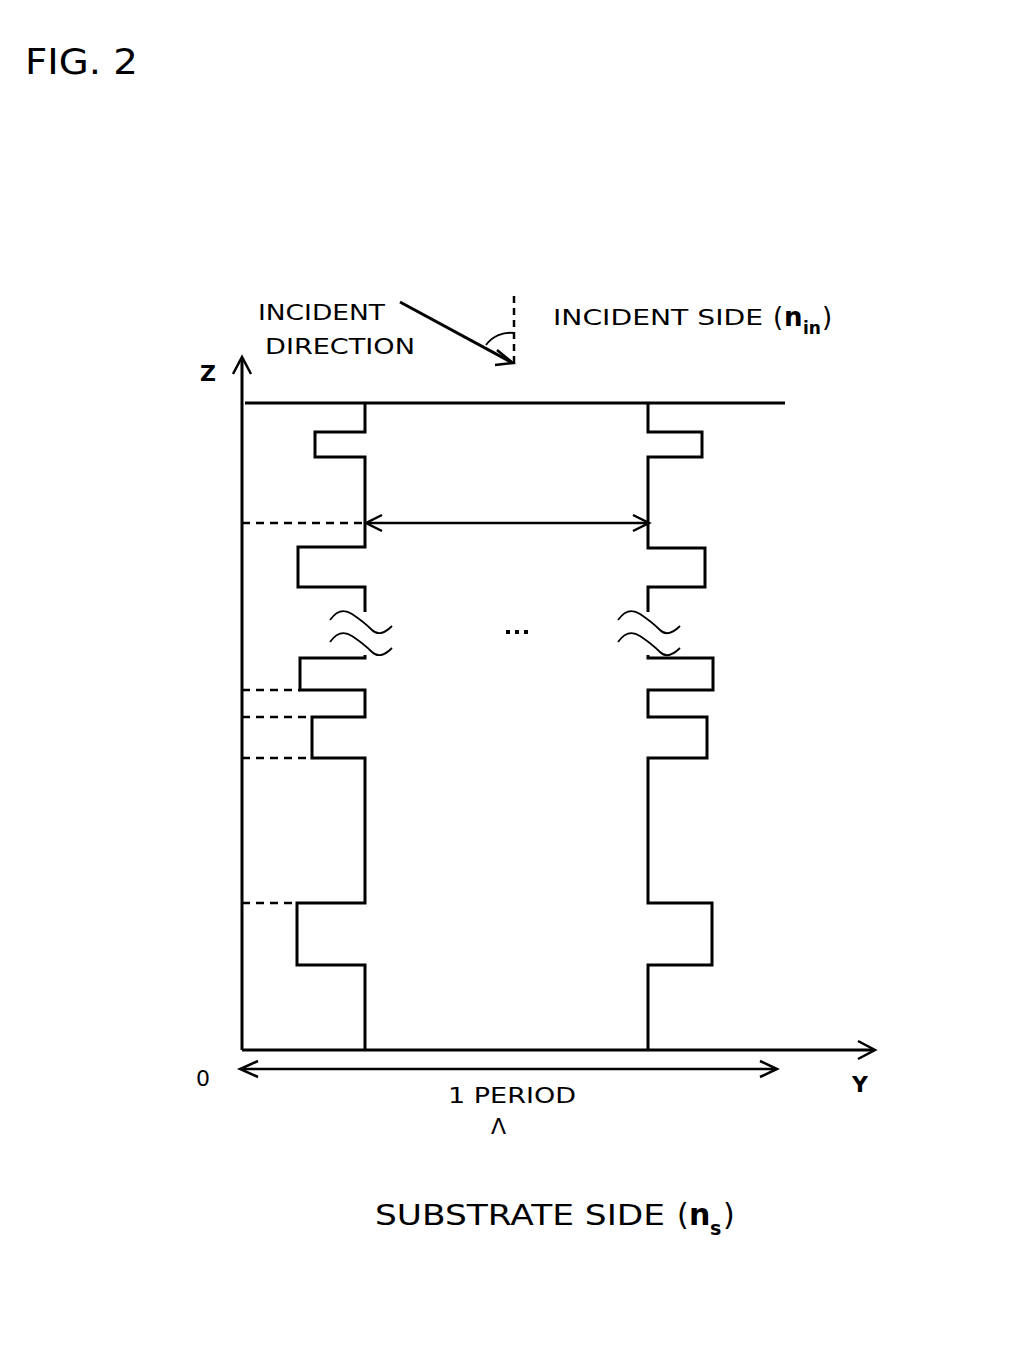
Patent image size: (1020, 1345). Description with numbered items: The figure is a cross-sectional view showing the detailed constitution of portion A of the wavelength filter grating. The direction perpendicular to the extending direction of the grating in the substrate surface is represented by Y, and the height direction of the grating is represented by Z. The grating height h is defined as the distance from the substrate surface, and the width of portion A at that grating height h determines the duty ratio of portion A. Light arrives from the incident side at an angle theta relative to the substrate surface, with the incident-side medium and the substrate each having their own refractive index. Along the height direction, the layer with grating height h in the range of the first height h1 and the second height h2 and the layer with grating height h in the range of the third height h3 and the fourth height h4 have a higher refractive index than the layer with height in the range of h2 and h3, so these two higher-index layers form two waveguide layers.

The grating height h is at (284, 526).
The first grating height h1 is at (248, 905).
The second grating height h2 is at (257, 760).
The third grating height h3 is at (257, 718).
The fourth grating height h4 is at (251, 688).
The angle of incident light theta is at (457, 332).